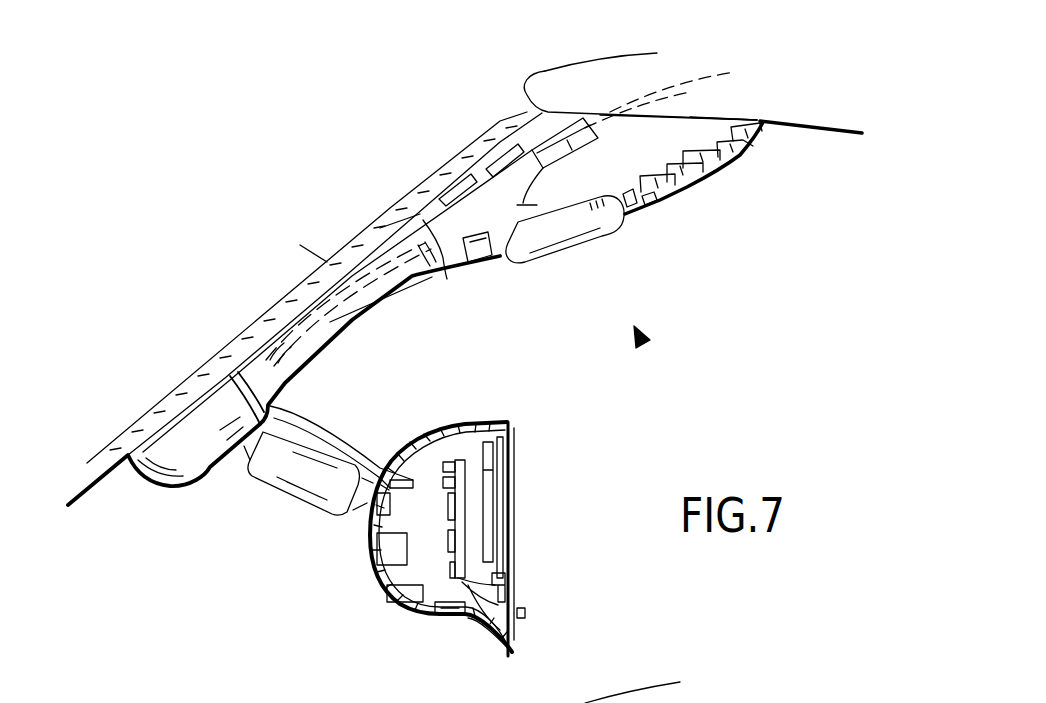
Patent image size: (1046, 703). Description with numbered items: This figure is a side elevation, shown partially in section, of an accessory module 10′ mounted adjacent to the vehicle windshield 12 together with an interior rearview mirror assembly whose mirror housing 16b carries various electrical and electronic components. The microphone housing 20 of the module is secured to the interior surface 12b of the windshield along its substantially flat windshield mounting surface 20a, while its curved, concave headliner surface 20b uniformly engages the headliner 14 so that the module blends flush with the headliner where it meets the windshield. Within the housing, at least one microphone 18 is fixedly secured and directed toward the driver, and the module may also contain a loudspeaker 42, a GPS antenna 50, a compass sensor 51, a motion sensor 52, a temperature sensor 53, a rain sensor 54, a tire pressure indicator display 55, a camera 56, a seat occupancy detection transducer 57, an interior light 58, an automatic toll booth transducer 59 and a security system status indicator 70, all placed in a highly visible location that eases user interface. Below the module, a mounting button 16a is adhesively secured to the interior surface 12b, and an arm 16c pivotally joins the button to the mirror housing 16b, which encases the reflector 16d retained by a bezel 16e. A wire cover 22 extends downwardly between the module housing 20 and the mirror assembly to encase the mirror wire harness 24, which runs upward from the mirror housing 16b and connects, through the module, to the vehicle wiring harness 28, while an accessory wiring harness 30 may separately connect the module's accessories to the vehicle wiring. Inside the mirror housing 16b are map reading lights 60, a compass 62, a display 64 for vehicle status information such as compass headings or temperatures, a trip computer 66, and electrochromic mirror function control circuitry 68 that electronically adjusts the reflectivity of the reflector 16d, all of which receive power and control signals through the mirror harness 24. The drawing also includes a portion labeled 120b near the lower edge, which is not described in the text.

The accessory module 10′ is at (641, 342).
The vehicle windshield 12 is at (187, 377).
The interior surface of windshield 12b is at (101, 480).
The headliner 14 is at (837, 112).
The mounting button 16a is at (185, 470).
The mirror housing 16b is at (452, 422).
The arm 16c is at (273, 470).
The reflector 16d is at (490, 466).
The bezel 16e is at (507, 493).
The microphone 18 is at (573, 252).
The microphone housing 20 is at (760, 119).
The windshield mounting surface 20a is at (415, 215).
The headliner surface 20b is at (717, 115).
The wire cover 22 is at (307, 345).
The mirror wire harness 24 is at (300, 420).
The vehicle wiring harness 28 is at (702, 76).
The accessory wiring harness 30 is at (538, 200).
The loudspeaker 42 is at (493, 257).
The GPS antenna 50 is at (490, 150).
The compass sensor 51 is at (697, 198).
The motion sensor 52 is at (680, 195).
The temperature sensor 53 is at (750, 182).
The rain sensor 54 is at (440, 187).
The tire pressure indicator display 55 is at (327, 262).
The camera 56 is at (722, 185).
The seat occupancy detection transducer 57 is at (655, 215).
The interior light 58 is at (465, 268).
The automatic toll booth transducer 59 is at (640, 225).
The map reading lights 60 is at (445, 618).
The compass 62 is at (390, 552).
The display 64 is at (510, 582).
The trip computer 66 is at (523, 627).
The electrochromic mirror function control circuitry 68 is at (383, 597).
The security system status indicator 70 is at (757, 148).
The roof rail portion 120b is at (670, 700).